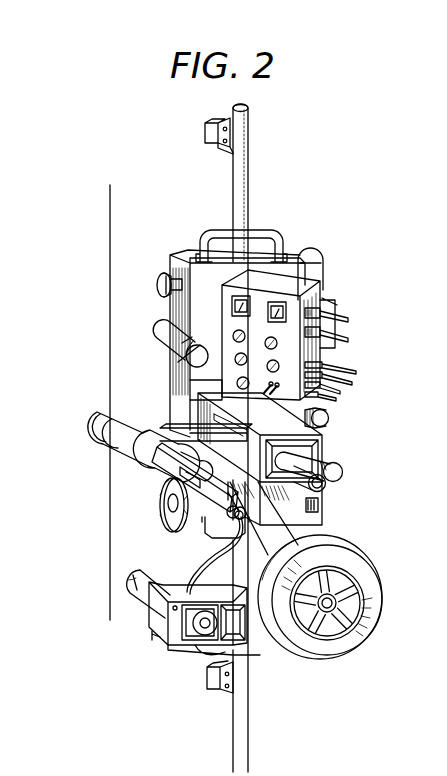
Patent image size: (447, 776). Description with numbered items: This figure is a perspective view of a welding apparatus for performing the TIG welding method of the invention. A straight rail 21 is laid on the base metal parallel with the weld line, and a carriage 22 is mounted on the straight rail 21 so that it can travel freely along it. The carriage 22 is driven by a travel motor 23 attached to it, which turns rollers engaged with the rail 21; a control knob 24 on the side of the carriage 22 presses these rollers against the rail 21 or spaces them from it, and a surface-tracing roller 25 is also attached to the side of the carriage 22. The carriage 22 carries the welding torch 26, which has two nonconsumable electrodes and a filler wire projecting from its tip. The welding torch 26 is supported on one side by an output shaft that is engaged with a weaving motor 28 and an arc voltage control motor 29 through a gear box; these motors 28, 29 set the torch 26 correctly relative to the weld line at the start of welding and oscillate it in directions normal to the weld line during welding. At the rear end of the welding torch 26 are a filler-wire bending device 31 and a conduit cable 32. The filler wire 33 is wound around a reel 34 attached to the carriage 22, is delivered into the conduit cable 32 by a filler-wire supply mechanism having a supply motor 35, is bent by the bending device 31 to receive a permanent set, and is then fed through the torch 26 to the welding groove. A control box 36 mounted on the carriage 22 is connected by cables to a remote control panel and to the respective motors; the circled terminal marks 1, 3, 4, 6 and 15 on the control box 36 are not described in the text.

The connector terminal 1 is at (359, 373).
The connector terminal 3 is at (343, 396).
The connector terminal 4 is at (357, 384).
The connector terminal 6 is at (353, 391).
The connector terminals 15 is at (352, 323).
The straight rail 21 is at (246, 167).
The carriage 22 is at (200, 250).
The travel motor 23 is at (313, 258).
The control knob 24 is at (158, 279).
The surface-tracing roller 25 is at (170, 342).
The welding torch 26 is at (122, 442).
The weaving motor 28 is at (324, 488).
The arc voltage control motor 29 is at (336, 465).
The filler-wire bending device 31 is at (165, 506).
The conduit cable 32 is at (200, 562).
The filler wire 33 is at (268, 653).
The reel 34 is at (356, 642).
The supply motor 35 is at (127, 590).
The control box 36 is at (314, 292).